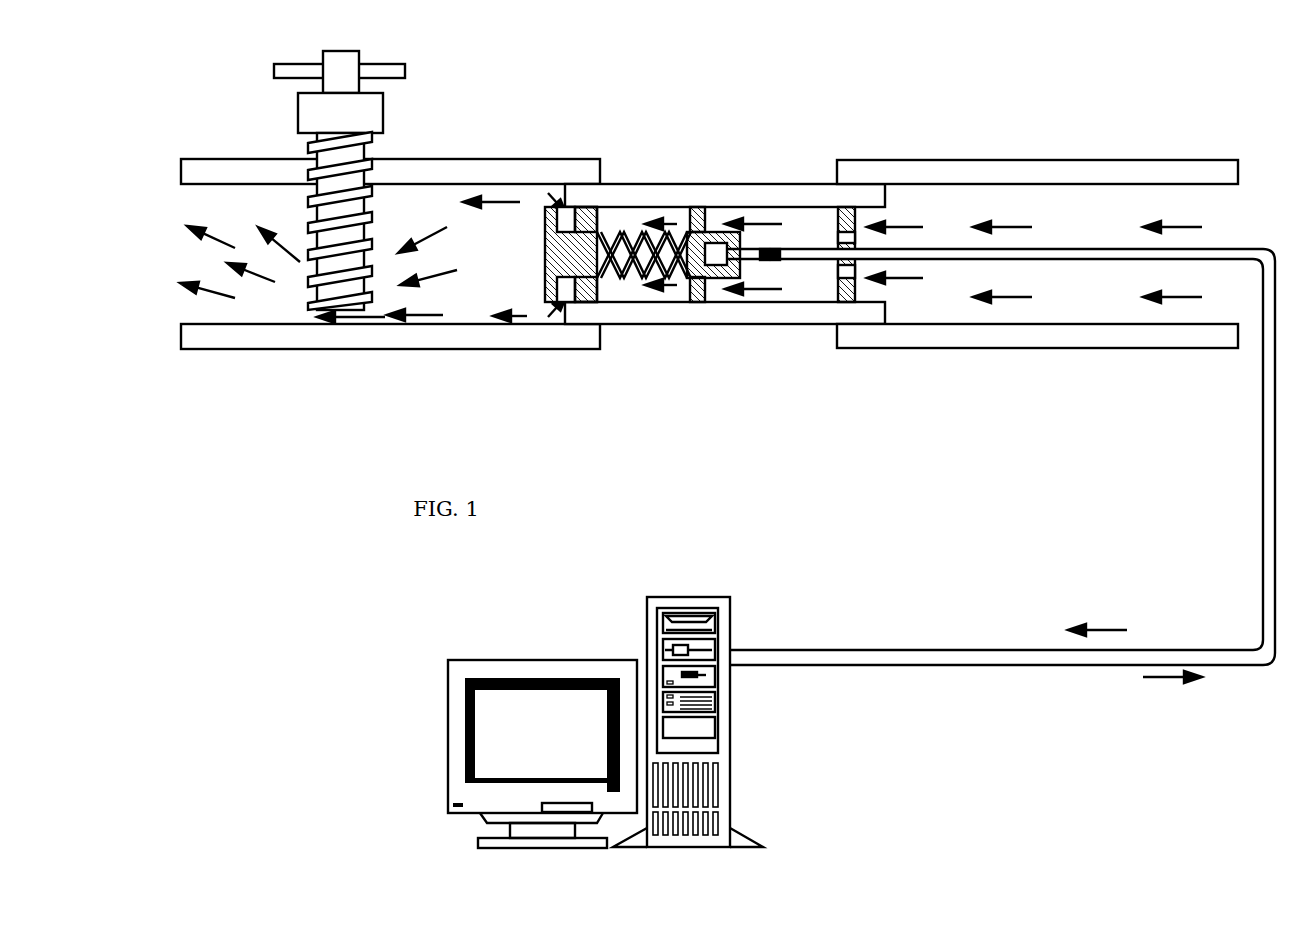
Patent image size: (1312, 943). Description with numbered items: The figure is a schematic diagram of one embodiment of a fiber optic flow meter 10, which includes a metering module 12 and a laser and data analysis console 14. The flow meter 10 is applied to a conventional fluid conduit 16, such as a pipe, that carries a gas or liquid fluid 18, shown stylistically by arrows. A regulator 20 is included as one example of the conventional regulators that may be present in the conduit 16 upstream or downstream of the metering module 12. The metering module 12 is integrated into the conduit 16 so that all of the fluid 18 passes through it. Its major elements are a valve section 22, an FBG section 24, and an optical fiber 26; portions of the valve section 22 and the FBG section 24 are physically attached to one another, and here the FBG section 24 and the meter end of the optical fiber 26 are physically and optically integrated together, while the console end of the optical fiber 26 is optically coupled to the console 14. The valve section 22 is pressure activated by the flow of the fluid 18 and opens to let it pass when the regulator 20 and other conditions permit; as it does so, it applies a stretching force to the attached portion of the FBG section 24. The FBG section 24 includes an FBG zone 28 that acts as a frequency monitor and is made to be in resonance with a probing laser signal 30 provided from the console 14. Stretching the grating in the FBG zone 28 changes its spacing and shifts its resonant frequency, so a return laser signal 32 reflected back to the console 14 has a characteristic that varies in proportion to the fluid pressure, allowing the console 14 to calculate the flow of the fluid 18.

The fiber optic flow meter 10 is at (312, 589).
The metering module 12 is at (717, 404).
The laser and data analysis console 14 is at (687, 598).
The fluid conduit 16 is at (555, 158).
The fluid 18 is at (196, 280).
The regulator 20 is at (365, 114).
The valve section 22 is at (624, 310).
The FBG section 24 is at (789, 310).
The optical fiber 26 is at (1262, 438).
The FBG zone 28 is at (773, 263).
The probing laser signal 30 is at (1155, 677).
The return laser signal 32 is at (1108, 630).